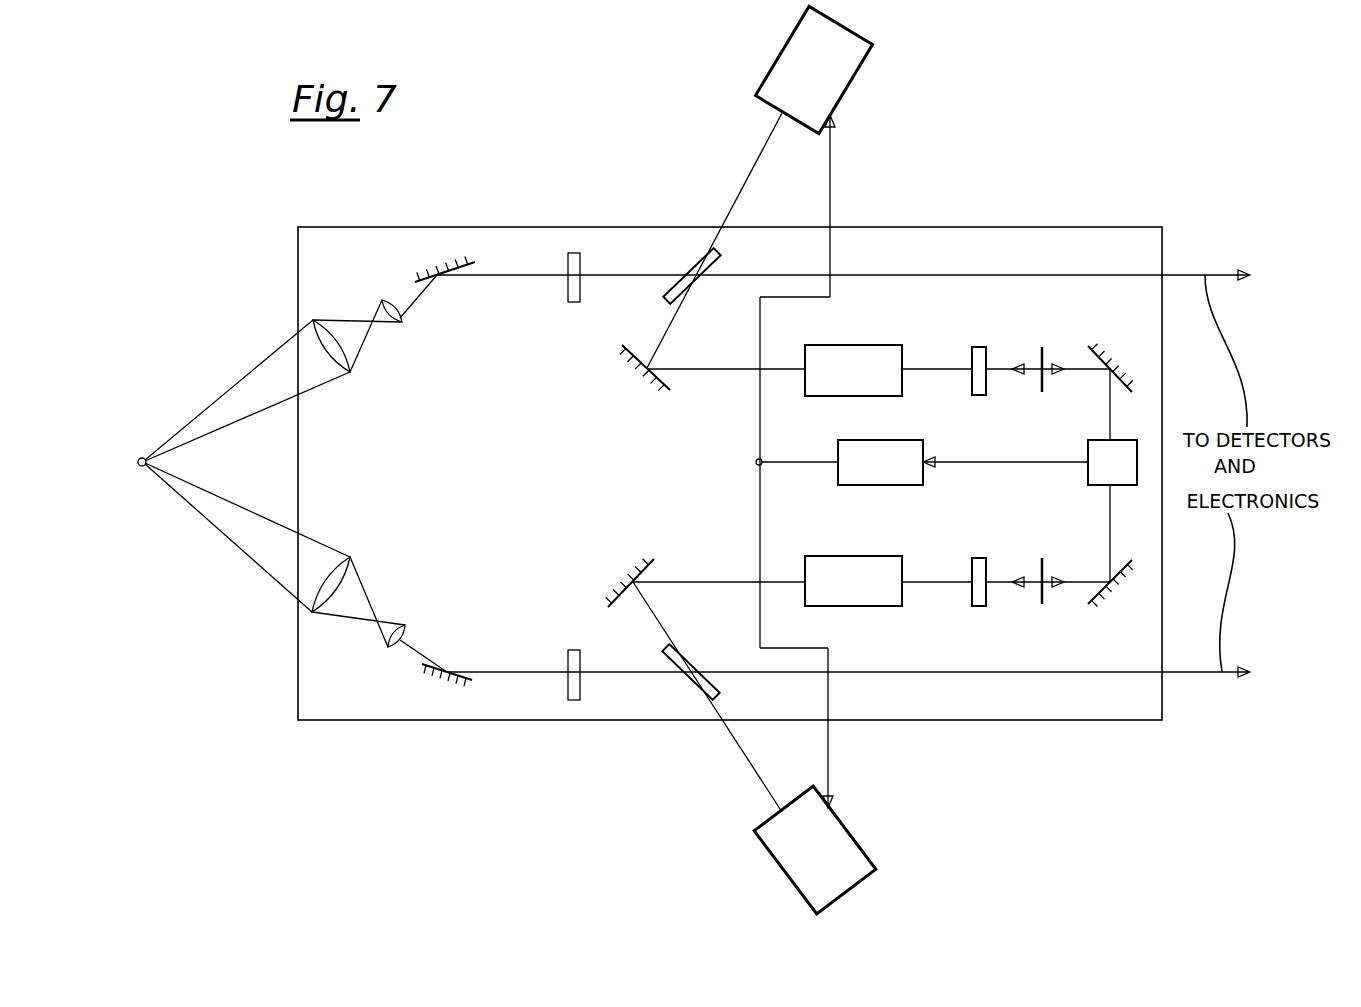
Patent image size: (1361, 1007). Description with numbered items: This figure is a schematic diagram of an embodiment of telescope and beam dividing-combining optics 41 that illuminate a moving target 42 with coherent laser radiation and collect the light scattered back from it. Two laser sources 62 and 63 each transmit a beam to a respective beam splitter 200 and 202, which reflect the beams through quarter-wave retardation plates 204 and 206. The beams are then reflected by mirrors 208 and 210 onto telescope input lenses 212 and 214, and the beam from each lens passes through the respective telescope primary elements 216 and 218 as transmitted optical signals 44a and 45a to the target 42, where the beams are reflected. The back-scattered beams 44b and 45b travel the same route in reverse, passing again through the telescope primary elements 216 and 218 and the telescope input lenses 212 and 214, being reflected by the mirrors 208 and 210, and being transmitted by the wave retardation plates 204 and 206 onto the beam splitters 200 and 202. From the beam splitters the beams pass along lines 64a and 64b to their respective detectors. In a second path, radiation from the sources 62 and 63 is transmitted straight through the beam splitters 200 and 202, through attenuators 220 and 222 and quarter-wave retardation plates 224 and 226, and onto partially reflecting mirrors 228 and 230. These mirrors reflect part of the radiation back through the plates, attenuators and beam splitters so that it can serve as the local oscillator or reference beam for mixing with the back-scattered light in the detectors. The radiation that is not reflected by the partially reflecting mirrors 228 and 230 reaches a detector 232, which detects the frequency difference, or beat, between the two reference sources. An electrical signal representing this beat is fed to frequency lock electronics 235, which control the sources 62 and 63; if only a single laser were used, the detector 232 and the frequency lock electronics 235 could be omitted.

The optics 41 is at (992, 226).
The target 42 is at (140, 458).
The transmitted optical signal 44a is at (262, 398).
The target scattered signal 44b is at (230, 400).
The transmitted optical signal 45a is at (262, 522).
The target scattered signal 45b is at (255, 550).
The laser source 62 is at (846, 832).
The laser source 63 is at (782, 52).
The line 64a is at (1068, 274).
The line 64b is at (1095, 648).
The beam splitter 200 is at (717, 688).
The beam splitter 202 is at (718, 262).
The quarter-wave retardation plate 204 is at (574, 650).
The quarter-wave retardation plate 206 is at (582, 264).
The mirror 208 is at (470, 688).
The mirror 210 is at (478, 270).
The telescope input lens 212 is at (408, 632).
The telescope input lens 214 is at (390, 300).
The telescope primary element 216 is at (352, 560).
The telescope primary element 218 is at (318, 320).
The attenuator 220 is at (880, 556).
The attenuator 222 is at (875, 345).
The quarter-wave retardation plate 224 is at (986, 558).
The quarter-wave retardation plate 226 is at (986, 350).
The partially reflecting mirror 228 is at (1045, 560).
The partially reflecting mirror 230 is at (1045, 350).
The detector 232 is at (1088, 452).
The frequency lock electronics 235 is at (923, 440).